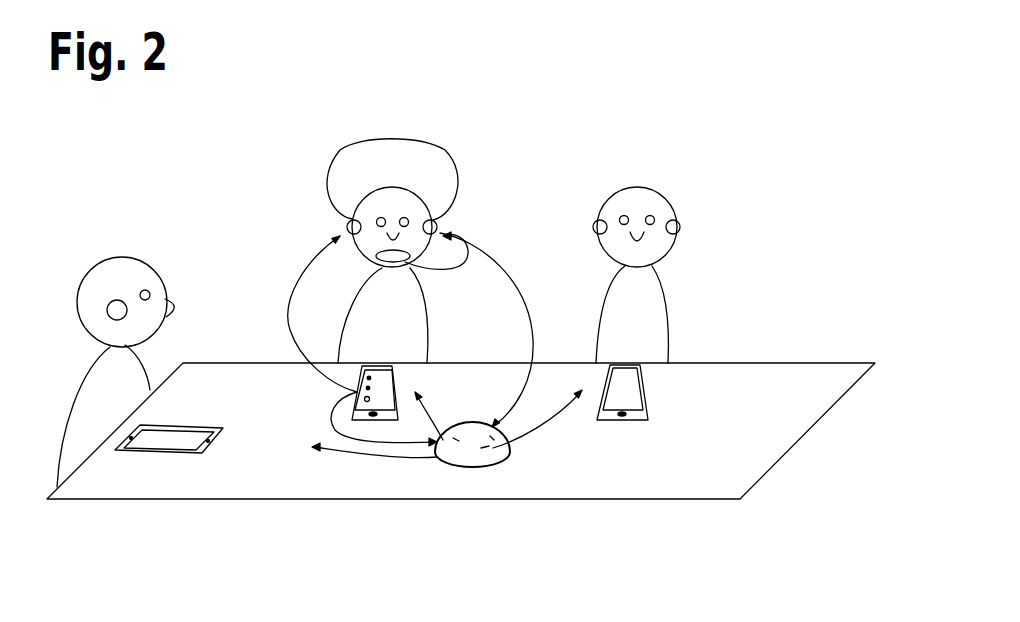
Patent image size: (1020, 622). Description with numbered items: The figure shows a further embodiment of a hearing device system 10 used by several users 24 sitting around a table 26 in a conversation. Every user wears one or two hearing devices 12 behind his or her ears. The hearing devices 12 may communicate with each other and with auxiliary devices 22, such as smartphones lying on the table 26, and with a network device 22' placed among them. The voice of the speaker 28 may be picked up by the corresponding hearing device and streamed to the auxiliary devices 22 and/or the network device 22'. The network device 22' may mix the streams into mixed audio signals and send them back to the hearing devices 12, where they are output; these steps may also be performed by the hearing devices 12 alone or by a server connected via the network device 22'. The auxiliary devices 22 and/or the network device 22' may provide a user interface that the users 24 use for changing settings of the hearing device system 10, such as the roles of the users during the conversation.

The hearing device system 10 is at (770, 140).
The hearing device 12 is at (117, 300).
The auxiliary device 22 is at (381, 437).
The network device 22' is at (447, 485).
The user 24 is at (122, 258).
The table 26 is at (693, 465).
The speaker 28 is at (393, 187).